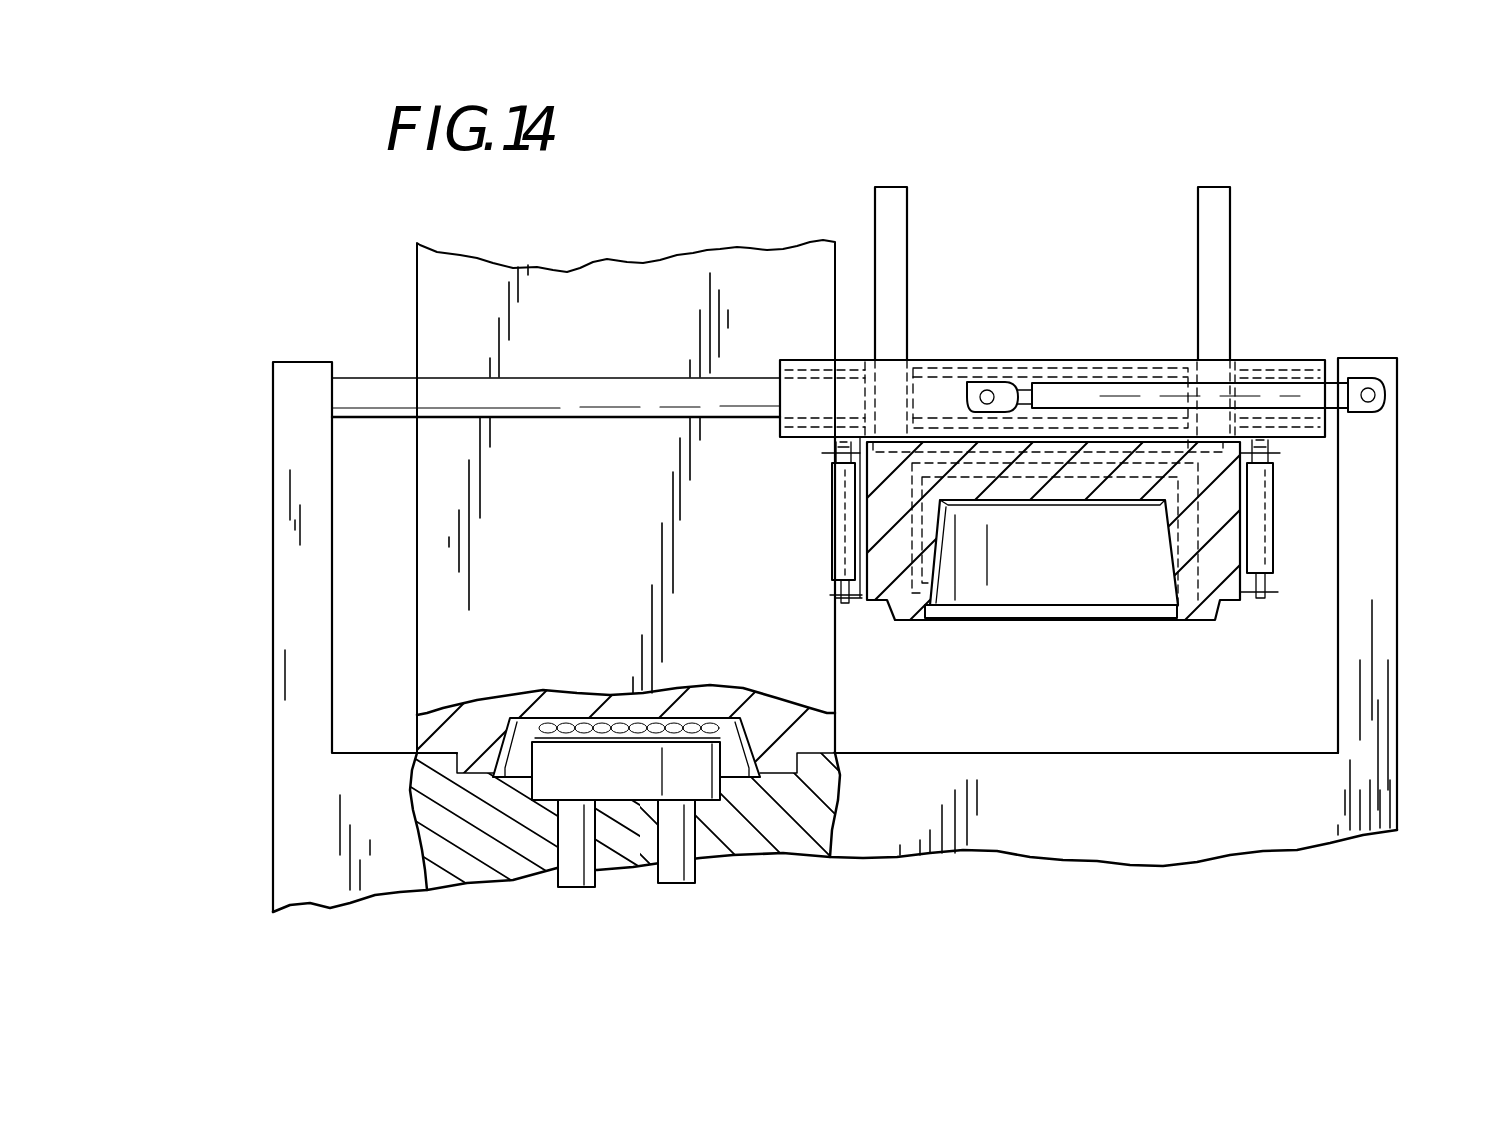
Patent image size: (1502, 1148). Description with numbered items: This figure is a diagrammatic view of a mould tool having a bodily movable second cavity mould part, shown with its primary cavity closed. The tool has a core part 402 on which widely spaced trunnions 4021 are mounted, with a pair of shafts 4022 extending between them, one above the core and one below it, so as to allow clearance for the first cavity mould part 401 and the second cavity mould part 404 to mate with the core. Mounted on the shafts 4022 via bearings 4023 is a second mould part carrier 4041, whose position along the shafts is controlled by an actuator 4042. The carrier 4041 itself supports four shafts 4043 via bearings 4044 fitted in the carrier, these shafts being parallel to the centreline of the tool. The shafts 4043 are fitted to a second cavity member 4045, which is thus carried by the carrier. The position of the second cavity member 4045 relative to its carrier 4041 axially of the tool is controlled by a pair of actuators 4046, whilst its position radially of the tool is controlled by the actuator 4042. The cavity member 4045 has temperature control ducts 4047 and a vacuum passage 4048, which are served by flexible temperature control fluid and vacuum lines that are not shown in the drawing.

The first cavity mould part 401 is at (608, 606).
The core part 402 is at (735, 762).
The second cavity mould part 404 is at (1086, 595).
The trunnions 4021 is at (298, 678).
The shafts 4022 is at (455, 387).
The bearings 4023 is at (957, 372).
The second mould part carrier 4041 is at (1290, 360).
The actuator 4042 is at (1327, 390).
The shafts 4043 is at (890, 242).
The bearings 4044 is at (1193, 365).
The second cavity member 4045 is at (925, 580).
The actuators 4046 is at (842, 527).
The temperature control ducts 4047 is at (1195, 600).
The vacuum passage 4048 is at (1058, 485).